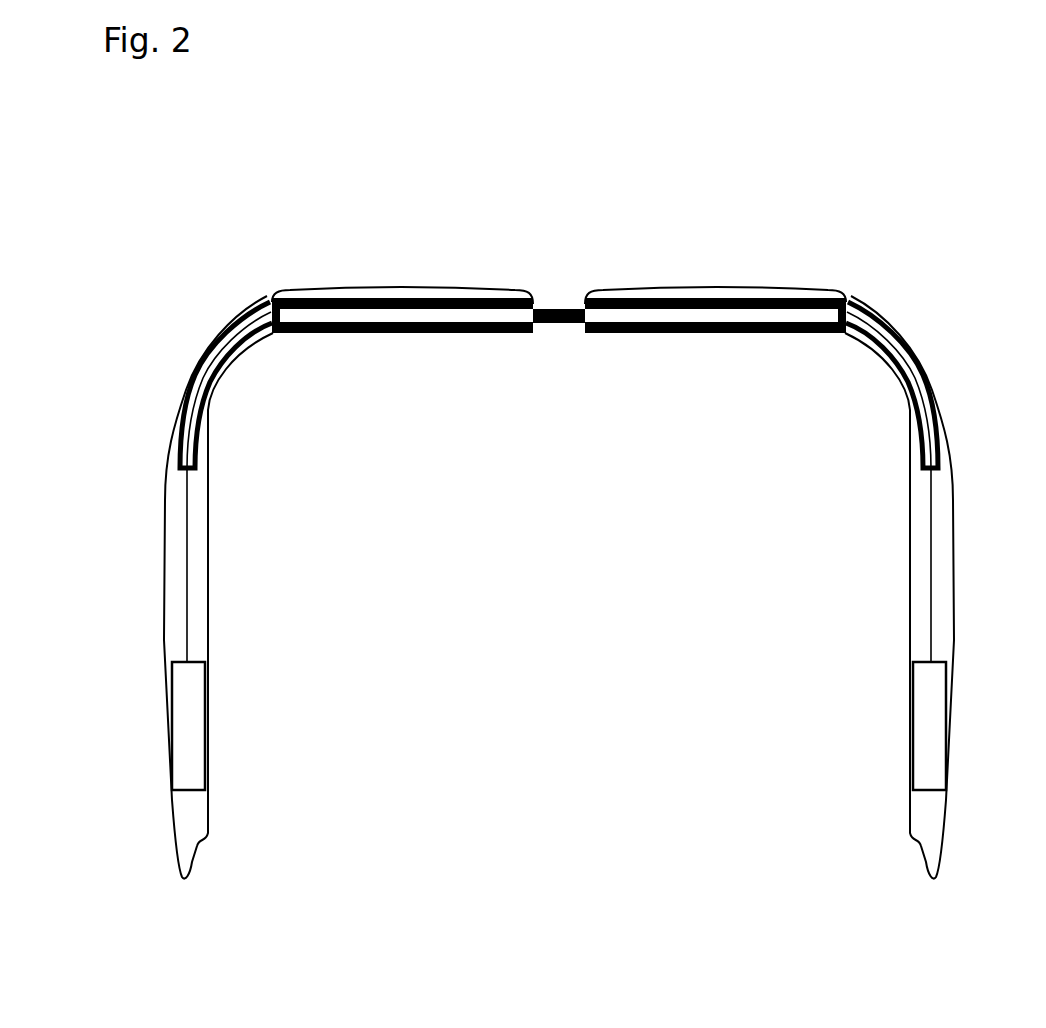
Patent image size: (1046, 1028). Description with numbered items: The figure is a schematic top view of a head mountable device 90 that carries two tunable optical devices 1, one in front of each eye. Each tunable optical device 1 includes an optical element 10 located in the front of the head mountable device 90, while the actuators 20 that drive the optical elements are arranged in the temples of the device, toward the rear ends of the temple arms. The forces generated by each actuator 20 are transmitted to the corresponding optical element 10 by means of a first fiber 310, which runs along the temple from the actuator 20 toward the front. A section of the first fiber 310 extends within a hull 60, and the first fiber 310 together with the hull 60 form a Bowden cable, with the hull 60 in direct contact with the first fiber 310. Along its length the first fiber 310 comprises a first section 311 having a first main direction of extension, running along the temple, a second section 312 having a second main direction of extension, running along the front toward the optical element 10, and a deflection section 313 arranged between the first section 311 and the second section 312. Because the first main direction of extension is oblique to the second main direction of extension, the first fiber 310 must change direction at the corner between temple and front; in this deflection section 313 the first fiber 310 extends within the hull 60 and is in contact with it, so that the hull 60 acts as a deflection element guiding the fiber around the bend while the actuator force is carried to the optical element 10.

The head mountable device 90 is at (168, 227).
The tunable optical device 1 is at (300, 316).
The optical element 10 is at (706, 318).
The hull 60 is at (188, 386).
The actuator 20 is at (197, 690).
The first fiber 310 is at (186, 527).
The first section 311 is at (930, 543).
The second section 312 is at (815, 316).
The deflection section 313 is at (912, 405).